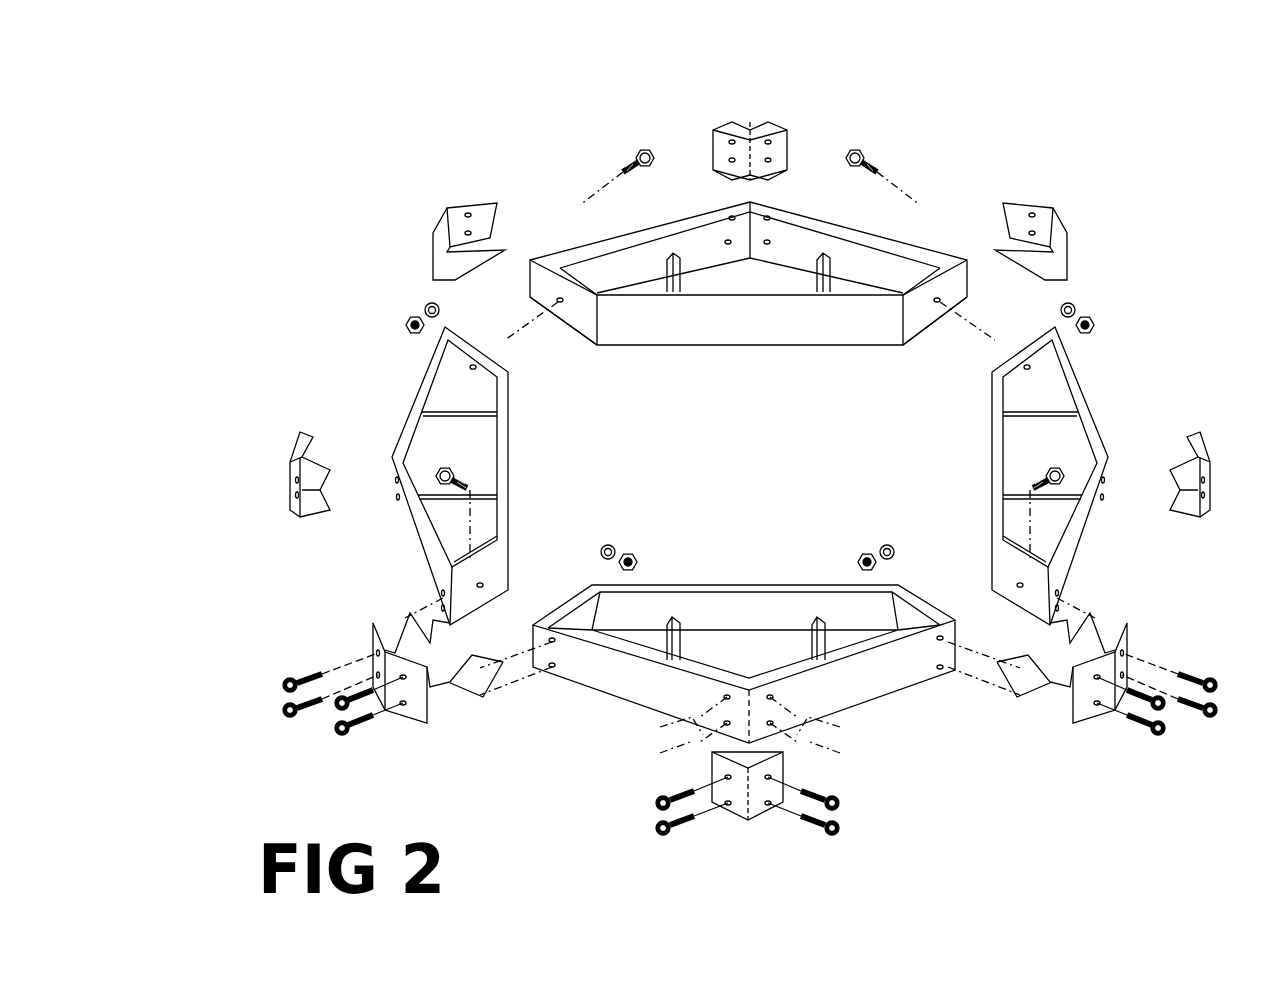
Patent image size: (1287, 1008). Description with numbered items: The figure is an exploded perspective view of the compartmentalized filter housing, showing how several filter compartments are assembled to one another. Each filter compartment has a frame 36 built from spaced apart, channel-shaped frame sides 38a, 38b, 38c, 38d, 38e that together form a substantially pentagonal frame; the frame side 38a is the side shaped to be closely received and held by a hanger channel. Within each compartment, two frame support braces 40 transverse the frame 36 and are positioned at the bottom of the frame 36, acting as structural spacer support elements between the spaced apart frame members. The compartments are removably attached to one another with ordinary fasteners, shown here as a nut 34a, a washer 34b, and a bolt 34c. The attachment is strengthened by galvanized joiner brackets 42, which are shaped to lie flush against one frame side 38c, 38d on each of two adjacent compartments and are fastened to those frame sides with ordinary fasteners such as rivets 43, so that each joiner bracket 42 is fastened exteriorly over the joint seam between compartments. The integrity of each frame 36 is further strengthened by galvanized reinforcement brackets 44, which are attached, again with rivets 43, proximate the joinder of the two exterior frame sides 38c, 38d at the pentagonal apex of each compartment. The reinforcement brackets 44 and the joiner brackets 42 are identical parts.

The nut 34a is at (863, 556).
The washer 34b is at (884, 546).
The bolt 34c is at (1038, 472).
The frame 36 is at (1105, 478).
The frame side 38a is at (703, 593).
The frame side 38b is at (945, 585).
The frame side 38c is at (1100, 395).
The frame side 38d is at (1090, 562).
The frame side 38e is at (1023, 613).
The frame support brace 40 is at (1035, 447).
The joiner bracket 42 is at (1125, 622).
The rivet 43 is at (345, 730).
The reinforcement bracket 44 is at (1215, 455).